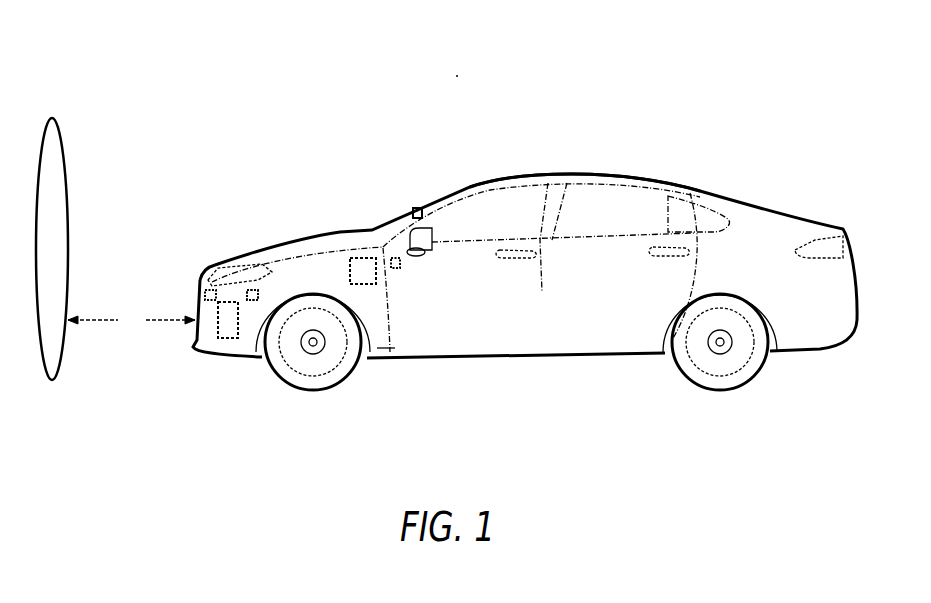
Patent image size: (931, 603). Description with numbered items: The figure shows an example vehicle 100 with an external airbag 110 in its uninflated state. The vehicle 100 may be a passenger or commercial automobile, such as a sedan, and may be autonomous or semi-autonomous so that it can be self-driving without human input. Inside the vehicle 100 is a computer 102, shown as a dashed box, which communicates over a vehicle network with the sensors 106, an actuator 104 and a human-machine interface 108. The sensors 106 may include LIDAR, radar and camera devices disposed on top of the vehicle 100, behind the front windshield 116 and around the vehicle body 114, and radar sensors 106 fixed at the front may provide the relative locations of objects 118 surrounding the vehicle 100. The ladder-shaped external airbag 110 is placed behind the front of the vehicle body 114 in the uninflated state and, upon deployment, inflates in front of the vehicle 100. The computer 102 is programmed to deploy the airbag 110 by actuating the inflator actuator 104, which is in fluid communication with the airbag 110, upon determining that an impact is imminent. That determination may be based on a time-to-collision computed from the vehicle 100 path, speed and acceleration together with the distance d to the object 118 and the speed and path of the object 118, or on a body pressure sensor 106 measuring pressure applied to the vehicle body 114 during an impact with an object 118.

The vehicle 100 is at (455, 73).
The computer 102 is at (356, 255).
The actuator 104 is at (251, 288).
The sensors 106 is at (415, 207).
The human-machine interface 108 is at (397, 268).
The external airbag 110 is at (226, 302).
The vehicle body 114 is at (575, 170).
The front windshield 116 is at (426, 145).
The object 118 is at (63, 153).
The distance to the object d is at (131, 320).